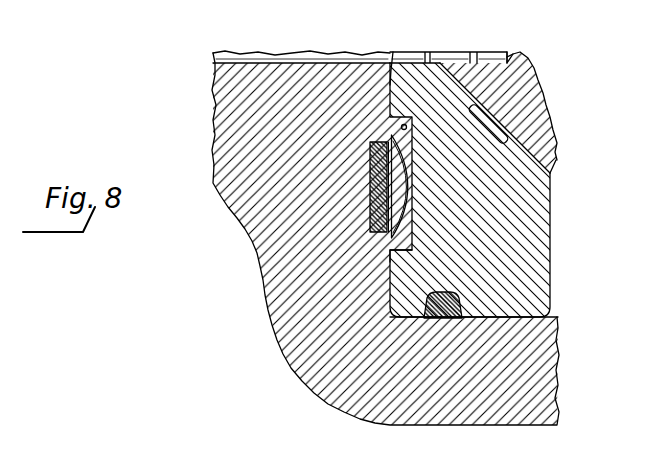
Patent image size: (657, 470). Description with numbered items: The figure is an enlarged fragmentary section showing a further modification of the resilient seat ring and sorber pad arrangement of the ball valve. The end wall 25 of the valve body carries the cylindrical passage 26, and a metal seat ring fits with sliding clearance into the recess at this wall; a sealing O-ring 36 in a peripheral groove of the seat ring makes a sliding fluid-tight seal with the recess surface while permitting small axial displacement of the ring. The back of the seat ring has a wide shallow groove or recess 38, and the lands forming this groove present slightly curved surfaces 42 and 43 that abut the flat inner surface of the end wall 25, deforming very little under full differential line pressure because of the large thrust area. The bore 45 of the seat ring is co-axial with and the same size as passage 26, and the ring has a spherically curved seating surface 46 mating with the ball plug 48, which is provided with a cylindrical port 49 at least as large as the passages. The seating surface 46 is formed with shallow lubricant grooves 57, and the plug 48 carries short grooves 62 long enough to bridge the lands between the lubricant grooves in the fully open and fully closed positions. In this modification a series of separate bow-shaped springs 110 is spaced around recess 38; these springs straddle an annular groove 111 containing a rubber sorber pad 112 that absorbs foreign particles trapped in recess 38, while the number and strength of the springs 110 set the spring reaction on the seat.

The end wall 25 is at (300, 276).
The cylindrical passage 26 is at (370, 58).
The sealing O-ring 36 is at (445, 318).
The back surface groove 38 is at (407, 127).
The curved surface 42 is at (395, 58).
The curved surface 43 is at (390, 257).
The bore 45 is at (428, 52).
The seating surface 46 is at (552, 168).
The ball plug 48 is at (524, 78).
The cylindrical port 49 is at (516, 54).
The lubricant groove 57 is at (497, 134).
The short groove 62 is at (500, 114).
The bow-shaped spring 110 is at (410, 192).
The annular groove 111 is at (388, 186).
The sorber pad 112 is at (369, 156).